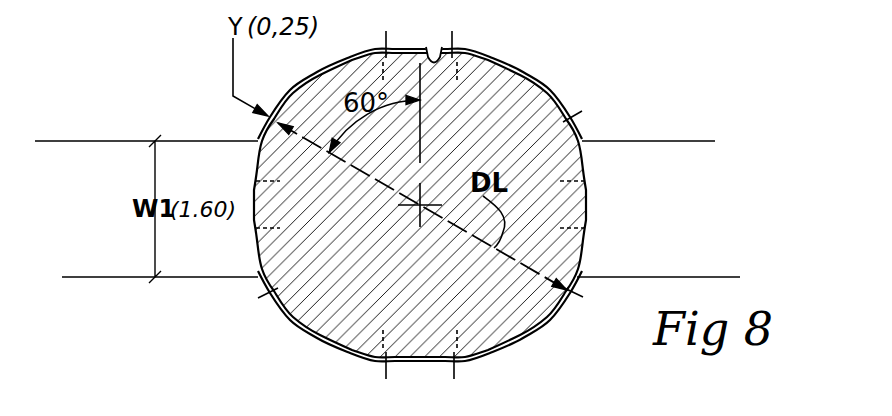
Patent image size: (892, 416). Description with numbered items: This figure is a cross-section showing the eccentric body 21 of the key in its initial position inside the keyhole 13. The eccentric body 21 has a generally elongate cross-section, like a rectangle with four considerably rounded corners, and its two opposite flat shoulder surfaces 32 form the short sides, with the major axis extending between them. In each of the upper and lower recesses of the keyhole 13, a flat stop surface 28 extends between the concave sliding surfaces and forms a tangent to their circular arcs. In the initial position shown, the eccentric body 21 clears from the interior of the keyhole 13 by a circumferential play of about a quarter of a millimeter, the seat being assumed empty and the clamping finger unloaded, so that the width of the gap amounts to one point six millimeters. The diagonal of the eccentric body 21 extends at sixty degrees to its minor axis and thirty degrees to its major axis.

The keyhole 13 is at (305, 351).
The eccentric body 21 is at (541, 65).
The stop surface 28 is at (439, 64).
The shoulder surface 32 is at (255, 206).